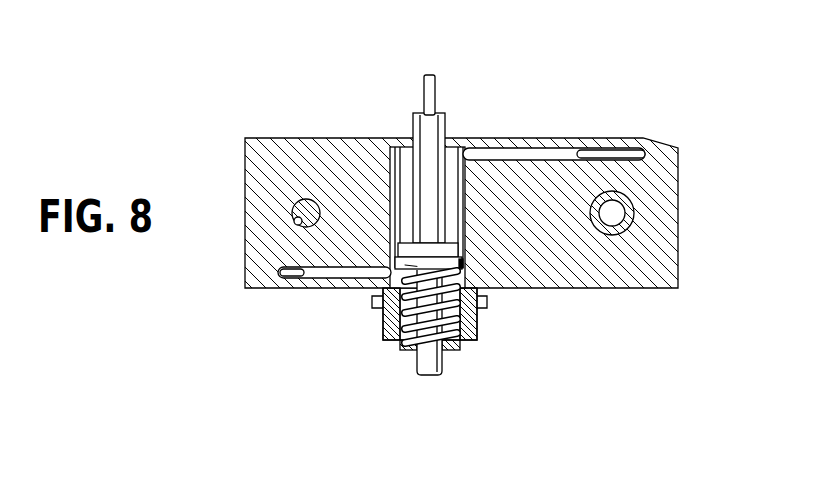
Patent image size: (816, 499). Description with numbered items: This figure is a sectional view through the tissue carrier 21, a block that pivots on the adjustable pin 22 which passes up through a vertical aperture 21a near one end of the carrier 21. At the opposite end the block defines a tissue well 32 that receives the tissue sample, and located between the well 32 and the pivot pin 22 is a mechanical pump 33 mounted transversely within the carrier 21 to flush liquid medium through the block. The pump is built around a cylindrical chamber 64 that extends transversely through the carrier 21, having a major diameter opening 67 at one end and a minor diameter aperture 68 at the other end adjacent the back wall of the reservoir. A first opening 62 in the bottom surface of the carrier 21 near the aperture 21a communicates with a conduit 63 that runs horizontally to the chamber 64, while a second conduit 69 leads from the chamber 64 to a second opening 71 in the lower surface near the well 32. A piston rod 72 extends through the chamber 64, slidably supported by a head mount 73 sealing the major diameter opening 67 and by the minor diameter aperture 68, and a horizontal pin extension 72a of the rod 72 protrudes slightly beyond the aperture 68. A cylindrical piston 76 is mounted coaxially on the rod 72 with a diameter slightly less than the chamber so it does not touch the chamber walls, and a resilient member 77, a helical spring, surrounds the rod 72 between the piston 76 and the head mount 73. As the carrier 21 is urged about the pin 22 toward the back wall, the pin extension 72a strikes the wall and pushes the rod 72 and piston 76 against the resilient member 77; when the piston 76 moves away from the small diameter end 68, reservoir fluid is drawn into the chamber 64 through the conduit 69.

The tissue carrier 21 is at (288, 141).
The vertical aperture 21a is at (297, 222).
The adjustable pin 22 is at (292, 210).
The tissue well 32 is at (633, 222).
The mechanical pump 33 is at (397, 353).
The first opening 62 is at (290, 288).
The conduit 63 is at (328, 290).
The cylindrical chamber 64 is at (452, 180).
The major diameter opening 67 is at (398, 142).
The minor diameter aperture 68 is at (415, 125).
The second conduit 69 is at (535, 152).
The second opening 71 is at (605, 152).
The piston rod 72 is at (447, 118).
The pin extension 72a is at (429, 73).
The head mount 73 is at (383, 330).
The cylindrical piston 76 is at (465, 262).
The resilient member 77 is at (453, 318).